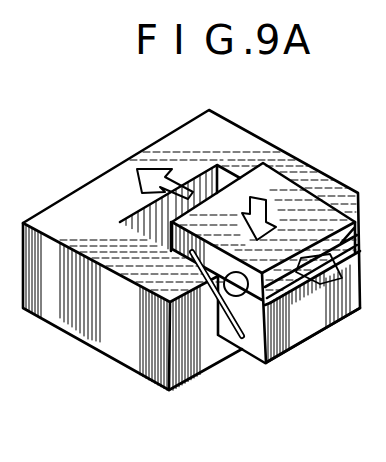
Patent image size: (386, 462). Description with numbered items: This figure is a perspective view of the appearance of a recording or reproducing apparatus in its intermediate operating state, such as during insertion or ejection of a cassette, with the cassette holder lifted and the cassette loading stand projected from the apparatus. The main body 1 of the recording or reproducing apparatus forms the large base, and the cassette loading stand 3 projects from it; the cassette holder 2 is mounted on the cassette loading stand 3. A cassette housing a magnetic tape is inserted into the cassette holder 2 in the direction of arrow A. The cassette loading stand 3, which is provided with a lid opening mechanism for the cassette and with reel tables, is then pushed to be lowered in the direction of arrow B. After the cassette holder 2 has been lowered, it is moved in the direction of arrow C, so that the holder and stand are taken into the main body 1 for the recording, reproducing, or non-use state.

The main body 1 is at (298, 163).
The cassette holder 2 is at (314, 200).
The cassette loading stand 3 is at (352, 295).
The arrow A is at (318, 278).
The arrow B is at (289, 252).
The arrow C is at (150, 170).